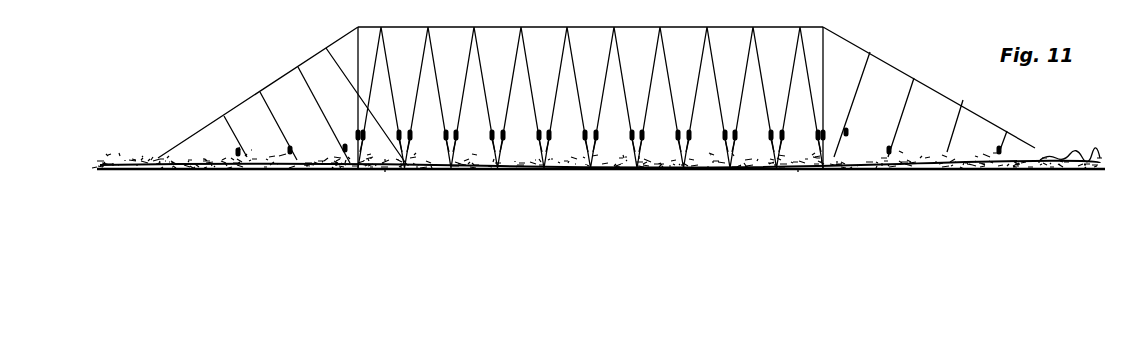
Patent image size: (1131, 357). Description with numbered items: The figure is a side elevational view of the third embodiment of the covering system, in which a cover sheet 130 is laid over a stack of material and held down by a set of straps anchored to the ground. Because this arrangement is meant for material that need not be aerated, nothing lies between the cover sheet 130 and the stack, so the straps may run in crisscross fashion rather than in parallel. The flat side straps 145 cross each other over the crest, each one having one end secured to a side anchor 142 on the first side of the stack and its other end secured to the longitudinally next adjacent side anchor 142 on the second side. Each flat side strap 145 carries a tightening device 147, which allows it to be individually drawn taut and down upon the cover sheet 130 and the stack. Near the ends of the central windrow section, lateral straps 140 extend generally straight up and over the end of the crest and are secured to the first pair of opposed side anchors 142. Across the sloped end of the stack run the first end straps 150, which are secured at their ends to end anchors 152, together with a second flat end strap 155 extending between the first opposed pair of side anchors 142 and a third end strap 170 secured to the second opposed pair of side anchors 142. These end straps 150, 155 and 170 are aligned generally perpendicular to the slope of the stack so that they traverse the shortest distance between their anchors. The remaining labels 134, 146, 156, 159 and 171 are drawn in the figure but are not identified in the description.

The cover sheet 130 is at (575, 169).
The ground 134 is at (1065, 146).
The lateral straps 140 is at (358, 45).
The side anchor 142 is at (362, 173).
The flat side straps 145 is at (478, 67).
The connectors at posts 146 is at (358, 135).
The tightening device 147 is at (447, 135).
The first end straps 150 is at (162, 156).
The end anchors 152 is at (200, 176).
The second flat end strap 155 is at (298, 78).
The brace feet 156 is at (290, 151).
The brace connector 159 is at (347, 148).
The third end strap 170 is at (335, 58).
The lines 171 is at (385, 170).